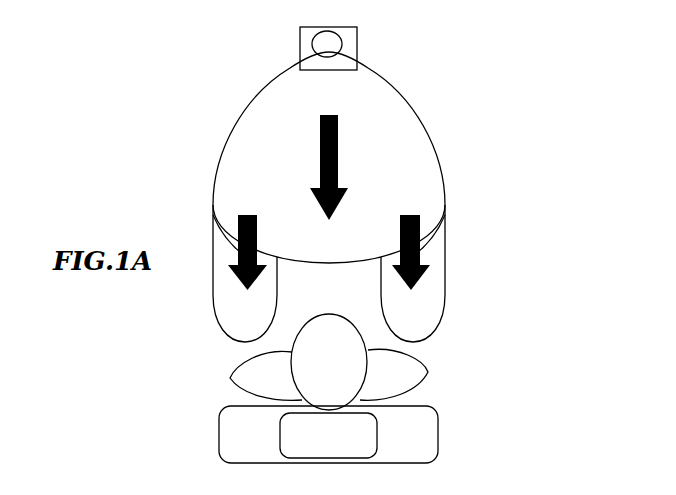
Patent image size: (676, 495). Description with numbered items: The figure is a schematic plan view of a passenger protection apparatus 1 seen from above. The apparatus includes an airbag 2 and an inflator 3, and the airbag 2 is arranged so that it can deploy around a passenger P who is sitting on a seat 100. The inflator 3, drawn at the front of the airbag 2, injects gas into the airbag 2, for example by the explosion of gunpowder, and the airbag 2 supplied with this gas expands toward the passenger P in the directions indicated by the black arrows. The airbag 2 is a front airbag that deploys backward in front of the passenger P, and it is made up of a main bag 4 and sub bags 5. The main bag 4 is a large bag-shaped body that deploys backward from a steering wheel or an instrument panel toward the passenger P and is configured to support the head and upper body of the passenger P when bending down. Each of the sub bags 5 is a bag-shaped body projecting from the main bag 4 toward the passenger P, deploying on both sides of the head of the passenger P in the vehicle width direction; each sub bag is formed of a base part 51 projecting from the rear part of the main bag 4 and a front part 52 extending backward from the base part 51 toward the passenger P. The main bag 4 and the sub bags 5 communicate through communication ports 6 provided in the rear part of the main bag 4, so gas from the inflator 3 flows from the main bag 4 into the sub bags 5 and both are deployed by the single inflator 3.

The passenger protection apparatus 1 is at (188, 158).
The airbag 2 is at (545, 142).
The inflator 3 is at (345, 45).
The main bag 4 is at (430, 135).
The sub bags 5 is at (500, 277).
The communication ports 6 is at (425, 232).
The base part 51 is at (443, 243).
The front part 52 is at (433, 328).
The passenger P is at (237, 382).
The seat 100 is at (220, 455).